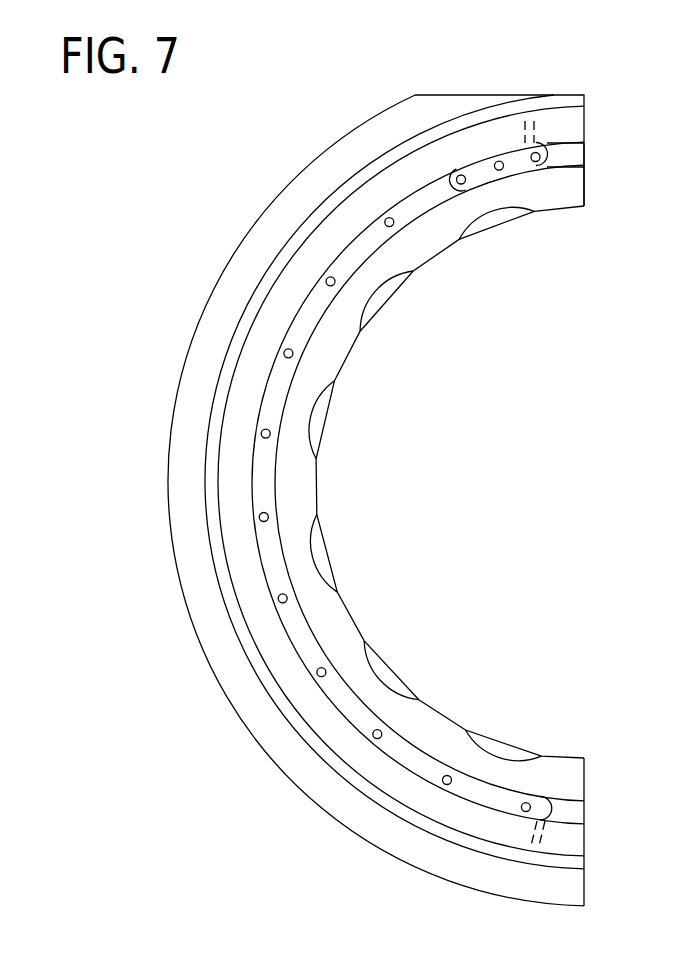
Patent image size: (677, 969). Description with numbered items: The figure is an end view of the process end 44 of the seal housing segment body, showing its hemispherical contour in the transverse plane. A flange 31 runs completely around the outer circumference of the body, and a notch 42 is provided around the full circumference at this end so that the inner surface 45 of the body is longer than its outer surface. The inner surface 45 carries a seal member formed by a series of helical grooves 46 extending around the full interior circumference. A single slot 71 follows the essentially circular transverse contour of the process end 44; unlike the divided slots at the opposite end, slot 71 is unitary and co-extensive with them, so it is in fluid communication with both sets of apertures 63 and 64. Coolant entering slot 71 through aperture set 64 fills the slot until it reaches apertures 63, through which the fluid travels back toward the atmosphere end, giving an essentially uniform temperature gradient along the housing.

The flange 31 is at (268, 240).
The notch 42 is at (367, 176).
The process end 44 is at (126, 265).
The inner surface 45 is at (565, 204).
The helical grooves 46 is at (383, 290).
The apertures 63 is at (528, 166).
The apertures 64 is at (317, 670).
The slot 71 is at (424, 202).